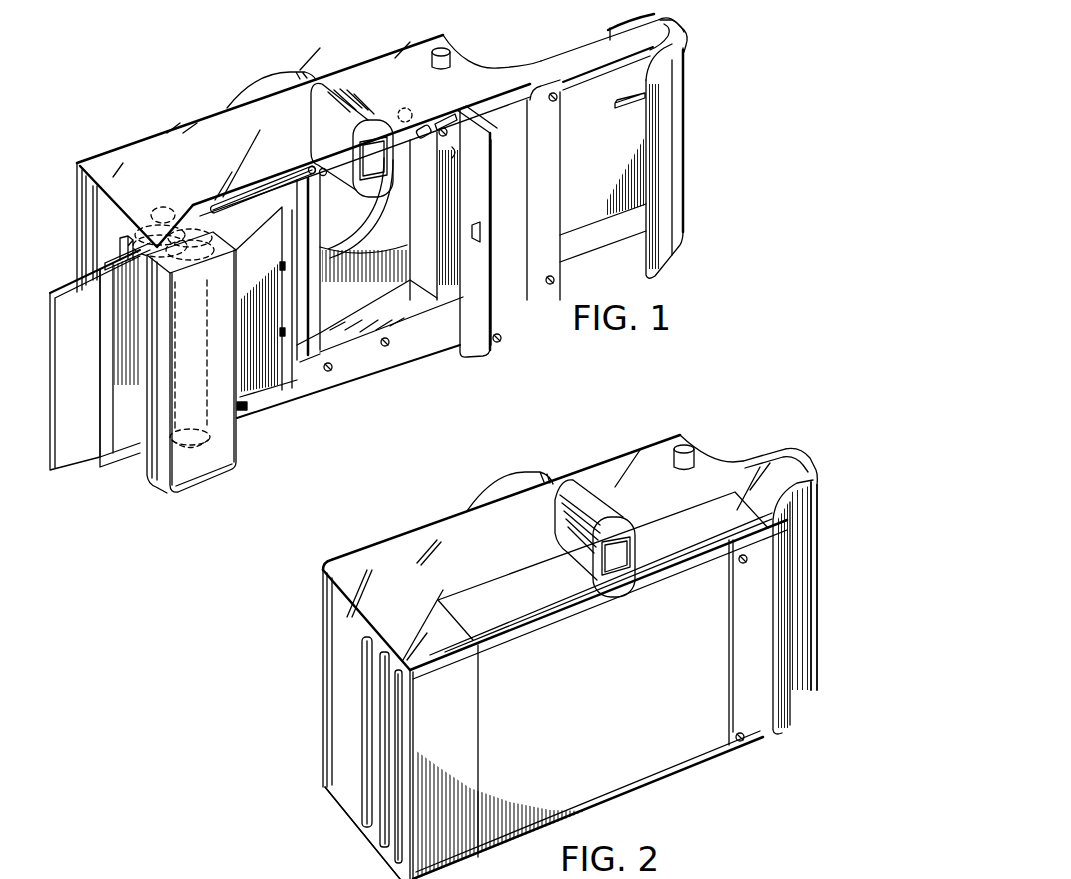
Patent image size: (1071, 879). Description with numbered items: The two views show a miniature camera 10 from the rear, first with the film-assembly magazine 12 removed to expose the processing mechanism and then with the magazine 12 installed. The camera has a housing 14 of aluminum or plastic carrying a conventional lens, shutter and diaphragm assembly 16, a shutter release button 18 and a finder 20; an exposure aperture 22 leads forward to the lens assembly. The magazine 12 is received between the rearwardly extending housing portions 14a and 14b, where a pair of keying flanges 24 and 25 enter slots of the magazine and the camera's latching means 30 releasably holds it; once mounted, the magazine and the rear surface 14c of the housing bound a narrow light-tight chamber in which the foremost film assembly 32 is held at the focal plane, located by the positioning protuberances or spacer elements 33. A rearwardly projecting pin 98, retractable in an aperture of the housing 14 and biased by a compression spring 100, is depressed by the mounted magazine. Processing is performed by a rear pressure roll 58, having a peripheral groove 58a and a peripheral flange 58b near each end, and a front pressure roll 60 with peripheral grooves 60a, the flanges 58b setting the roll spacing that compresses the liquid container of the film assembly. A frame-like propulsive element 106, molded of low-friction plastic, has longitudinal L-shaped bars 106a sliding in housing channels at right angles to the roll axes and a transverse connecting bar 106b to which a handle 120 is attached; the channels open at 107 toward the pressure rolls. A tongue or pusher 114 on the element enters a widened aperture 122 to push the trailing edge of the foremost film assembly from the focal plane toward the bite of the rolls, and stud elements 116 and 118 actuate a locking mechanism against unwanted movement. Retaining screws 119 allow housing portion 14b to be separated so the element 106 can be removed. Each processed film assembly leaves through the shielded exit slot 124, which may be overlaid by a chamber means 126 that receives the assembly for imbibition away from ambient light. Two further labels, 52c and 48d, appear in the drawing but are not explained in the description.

In FIG. 1, the miniature camera 10 is at (546, 369).
In FIG. 2, the magazine 12 is at (634, 699).
In FIG. 1, the housing 14 is at (152, 129).
In FIG. 2, the housing 14 is at (420, 520).
In FIG. 1, the rearwardly-extending housing portion 14a is at (239, 455).
In FIG. 1, the rearwardly-extending housing portion 14b is at (477, 359).
In FIG. 1, the rear surface of the housing 14c is at (372, 362).
In FIG. 1, the lens, shutter and diaphragm assembly 16 is at (283, 75).
In FIG. 2, the lens, shutter and diaphragm assembly 16 is at (512, 478).
In FIG. 1, the shutter release button 18 is at (446, 50).
In FIG. 2, the shutter release button 18 is at (690, 446).
In FIG. 1, the finder 20 is at (318, 108).
In FIG. 2, the finder 20 is at (618, 513).
In FIG. 1, the exposure aperture 22 is at (492, 194).
In FIG. 1, the keying flange 24 is at (266, 190).
In FIG. 1, the keying flange 25 is at (430, 118).
In FIG. 1, the latching means 30 is at (481, 226).
In FIG. 1, the foremost film assembly 32 is at (280, 405).
In FIG. 1, the positioning protuberances 33 is at (443, 128).
In FIG. 1, the rear pressure roll 58 is at (205, 345).
In FIG. 1, the peripheral groove 58a is at (196, 458).
In FIG. 1, the peripheral flange 58b is at (233, 266).
In FIG. 1, the front pressure roll 60 is at (140, 228).
In FIG. 1, the peripheral groove 60a is at (142, 222).
In FIG. 1, the pin 98 is at (425, 138).
In FIG. 1, the compression spring 100 is at (403, 110).
In FIG. 1, the propulsive element 106 is at (579, 257).
In FIG. 1, the longitudinal L-shaped bars 106a is at (583, 58).
In FIG. 1, the transverse connecting bar 106b is at (672, 30).
In FIG. 1, the opening 107 is at (241, 411).
In FIG. 1, the tongue 114 is at (303, 374).
In FIG. 1, the stud element 116 is at (343, 242).
In FIG. 1, the stud element 118 is at (620, 111).
In FIG. 1, the retaining screws 119 is at (500, 342).
In FIG. 2, the retaining screws 119 is at (741, 742).
In FIG. 1, the handle 120 is at (684, 201).
In FIG. 2, the handle 120 is at (808, 683).
In FIG. 1, the widened aperture 122 is at (455, 149).
In FIG. 1, the exit slot 124 is at (141, 454).
In FIG. 2, the exit slot 124 is at (385, 817).
In FIG. 1, the chamber means 126 is at (150, 263).
In FIG. 2, the chamber means 126 is at (393, 733).
In FIG. 2, the cut-off numeral 52c is at (773, 870).
In FIG. 2, the cut-off numeral 48d is at (248, 874).